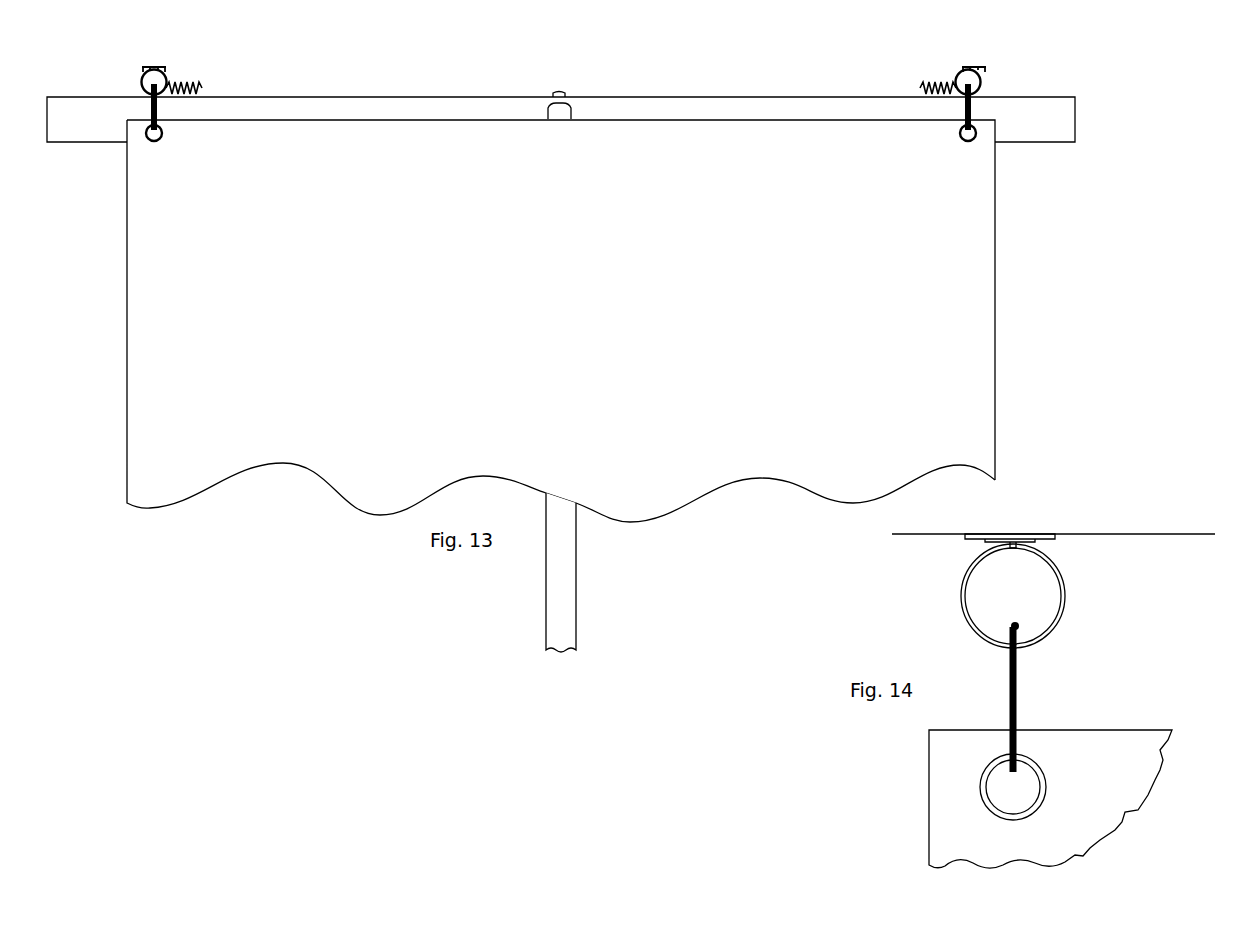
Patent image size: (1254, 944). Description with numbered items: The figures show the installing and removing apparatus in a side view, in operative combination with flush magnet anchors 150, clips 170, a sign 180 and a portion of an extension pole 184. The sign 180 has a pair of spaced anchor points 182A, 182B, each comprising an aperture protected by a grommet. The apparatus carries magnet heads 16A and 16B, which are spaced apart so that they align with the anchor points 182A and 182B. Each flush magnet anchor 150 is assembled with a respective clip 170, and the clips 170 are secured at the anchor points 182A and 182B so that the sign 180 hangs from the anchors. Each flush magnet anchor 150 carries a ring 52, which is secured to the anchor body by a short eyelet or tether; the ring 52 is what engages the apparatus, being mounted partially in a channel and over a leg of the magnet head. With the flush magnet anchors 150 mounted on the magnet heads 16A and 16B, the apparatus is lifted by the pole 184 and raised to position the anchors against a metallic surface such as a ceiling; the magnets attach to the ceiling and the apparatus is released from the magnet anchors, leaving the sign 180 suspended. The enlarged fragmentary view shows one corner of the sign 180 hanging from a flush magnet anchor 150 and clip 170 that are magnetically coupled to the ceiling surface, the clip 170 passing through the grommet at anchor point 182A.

In FIG. 13, the magnet head 16A is at (141, 85).
In FIG. 13, the magnet head 16B is at (983, 82).
In FIG. 13, the ring 52 is at (168, 72).
In FIG. 14, the ring 52 is at (1064, 582).
In FIG. 13, the flush magnet anchor 150 is at (150, 67).
In FIG. 14, the flush magnet anchor 150 is at (1010, 537).
In FIG. 13, the clip 170 is at (160, 112).
In FIG. 14, the clip 170 is at (1022, 683).
In FIG. 13, the sign 180 is at (561, 312).
In FIG. 14, the sign 180 is at (1050, 799).
In FIG. 13, the anchor point 182A is at (160, 139).
In FIG. 14, the anchor point 182A is at (1010, 822).
In FIG. 13, the anchor point 182B is at (958, 136).
In FIG. 13, the pole 184 is at (573, 593).